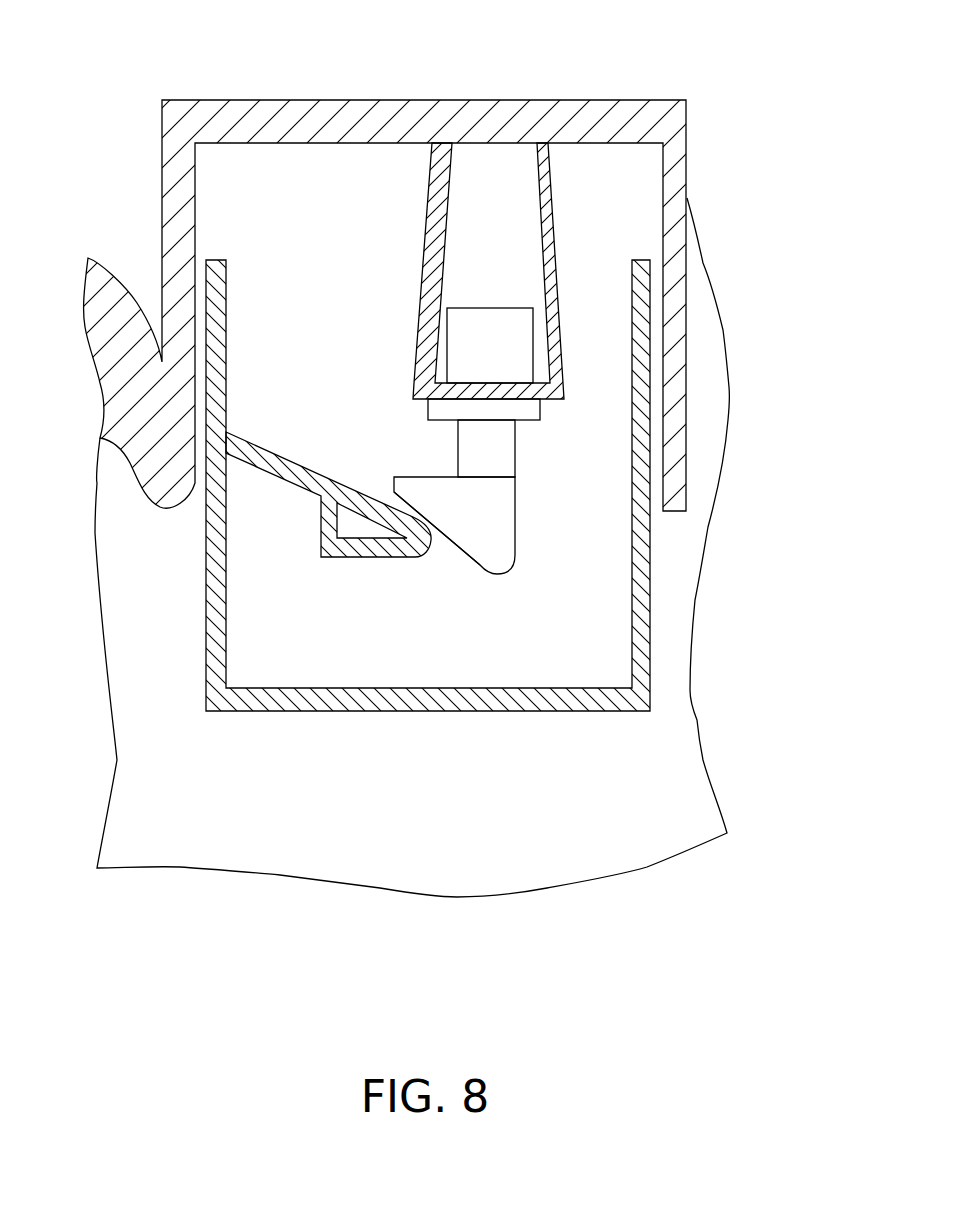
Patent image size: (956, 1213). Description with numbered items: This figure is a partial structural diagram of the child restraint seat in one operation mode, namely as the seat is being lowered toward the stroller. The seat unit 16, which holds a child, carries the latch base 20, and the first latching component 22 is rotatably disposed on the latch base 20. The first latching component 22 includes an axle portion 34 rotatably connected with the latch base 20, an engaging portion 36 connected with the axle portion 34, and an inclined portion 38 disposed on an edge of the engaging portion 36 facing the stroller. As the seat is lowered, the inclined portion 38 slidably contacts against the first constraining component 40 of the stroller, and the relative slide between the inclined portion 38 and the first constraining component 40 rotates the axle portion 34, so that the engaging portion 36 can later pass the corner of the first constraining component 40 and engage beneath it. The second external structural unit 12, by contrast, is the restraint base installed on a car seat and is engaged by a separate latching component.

The second external structural unit 12 is at (214, 292).
The seat unit 16 is at (247, 805).
The latch base 20 is at (433, 213).
The first latching component 22 is at (617, 544).
The axle portion 34 is at (493, 442).
The engaging portion 36 is at (436, 497).
The inclined portion 38 is at (462, 550).
The first constraining component 40 is at (322, 537).